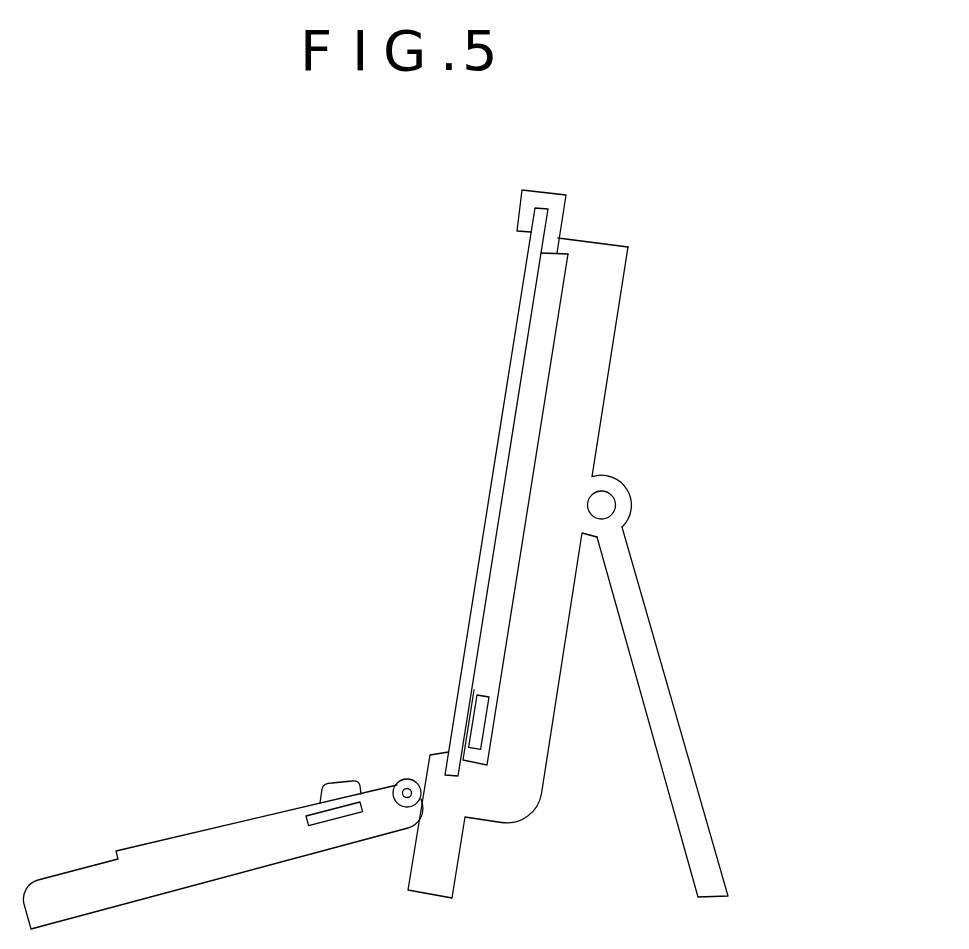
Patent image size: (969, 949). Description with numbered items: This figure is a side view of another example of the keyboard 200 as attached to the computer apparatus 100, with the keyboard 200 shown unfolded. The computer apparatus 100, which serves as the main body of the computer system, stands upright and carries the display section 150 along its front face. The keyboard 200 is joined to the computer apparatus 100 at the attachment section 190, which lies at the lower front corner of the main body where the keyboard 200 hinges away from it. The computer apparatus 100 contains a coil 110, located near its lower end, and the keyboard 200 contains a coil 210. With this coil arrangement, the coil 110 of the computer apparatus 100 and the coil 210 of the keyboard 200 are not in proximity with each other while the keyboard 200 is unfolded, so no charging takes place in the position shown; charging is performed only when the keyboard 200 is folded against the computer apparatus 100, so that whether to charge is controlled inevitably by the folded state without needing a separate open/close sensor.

The computer apparatus 100 is at (612, 244).
The coil 110 is at (474, 713).
The display section 150 is at (501, 417).
The attachment section 190 is at (396, 781).
The keyboard 200 is at (228, 824).
The coil 210 is at (337, 819).